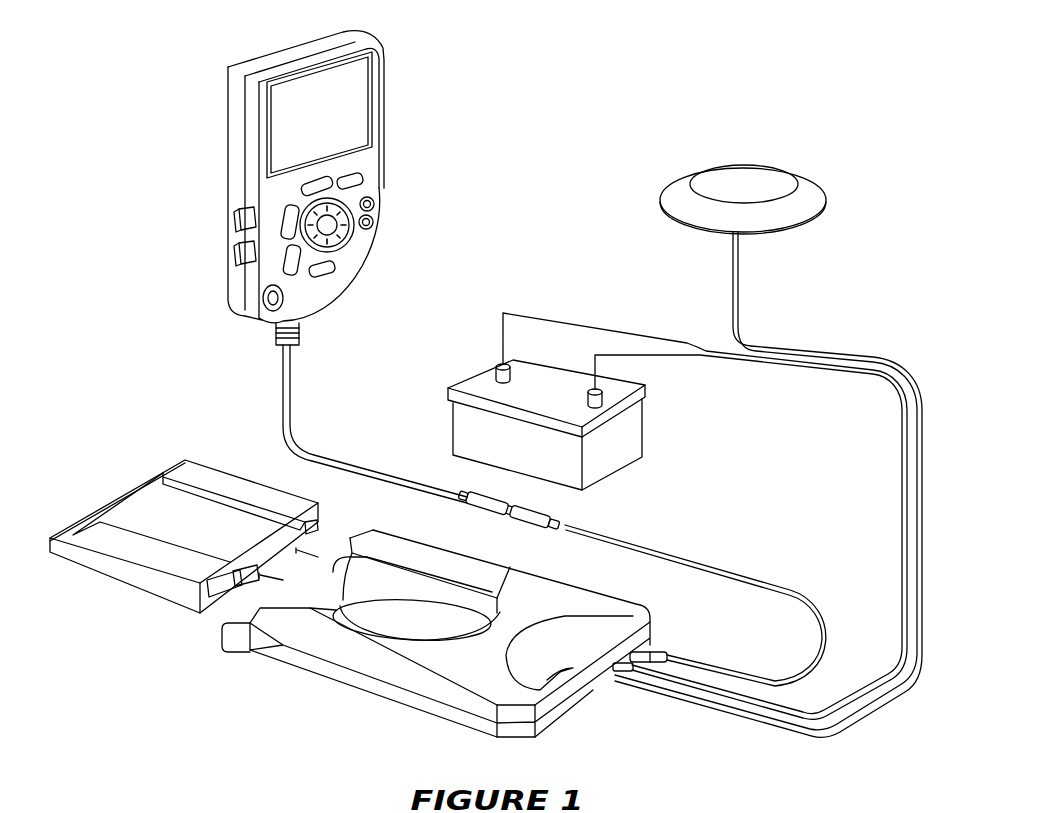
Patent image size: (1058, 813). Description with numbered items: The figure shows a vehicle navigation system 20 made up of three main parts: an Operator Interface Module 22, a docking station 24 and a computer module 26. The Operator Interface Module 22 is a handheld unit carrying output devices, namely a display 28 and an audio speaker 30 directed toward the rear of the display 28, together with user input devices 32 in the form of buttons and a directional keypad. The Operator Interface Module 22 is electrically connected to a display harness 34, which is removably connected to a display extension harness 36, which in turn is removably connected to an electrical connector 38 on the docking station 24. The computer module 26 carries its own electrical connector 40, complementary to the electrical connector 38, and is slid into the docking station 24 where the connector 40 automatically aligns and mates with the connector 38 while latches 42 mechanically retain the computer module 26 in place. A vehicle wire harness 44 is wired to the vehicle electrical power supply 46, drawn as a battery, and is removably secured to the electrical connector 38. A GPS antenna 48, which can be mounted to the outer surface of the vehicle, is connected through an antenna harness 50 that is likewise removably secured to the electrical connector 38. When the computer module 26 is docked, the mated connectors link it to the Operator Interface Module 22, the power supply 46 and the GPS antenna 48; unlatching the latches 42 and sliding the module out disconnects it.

The vehicle navigation system 20 is at (535, 228).
The Operator Interface Module 22 is at (278, 44).
The docking station 24 is at (531, 575).
The computer module 26 is at (222, 471).
The display 28 is at (329, 122).
The audio speaker 30 is at (386, 212).
The user input devices 32 is at (307, 192).
The display harness 34 is at (340, 460).
The display extension harness 36 is at (737, 573).
The electrical connector 38 is at (573, 668).
The electrical connector 40 is at (322, 537).
The latches 42 is at (340, 558).
The vehicle wire harness 44 is at (900, 607).
The vehicle electrical power supply 46 is at (501, 451).
The GPS antenna 48 is at (745, 177).
The antenna harness 50 is at (710, 723).